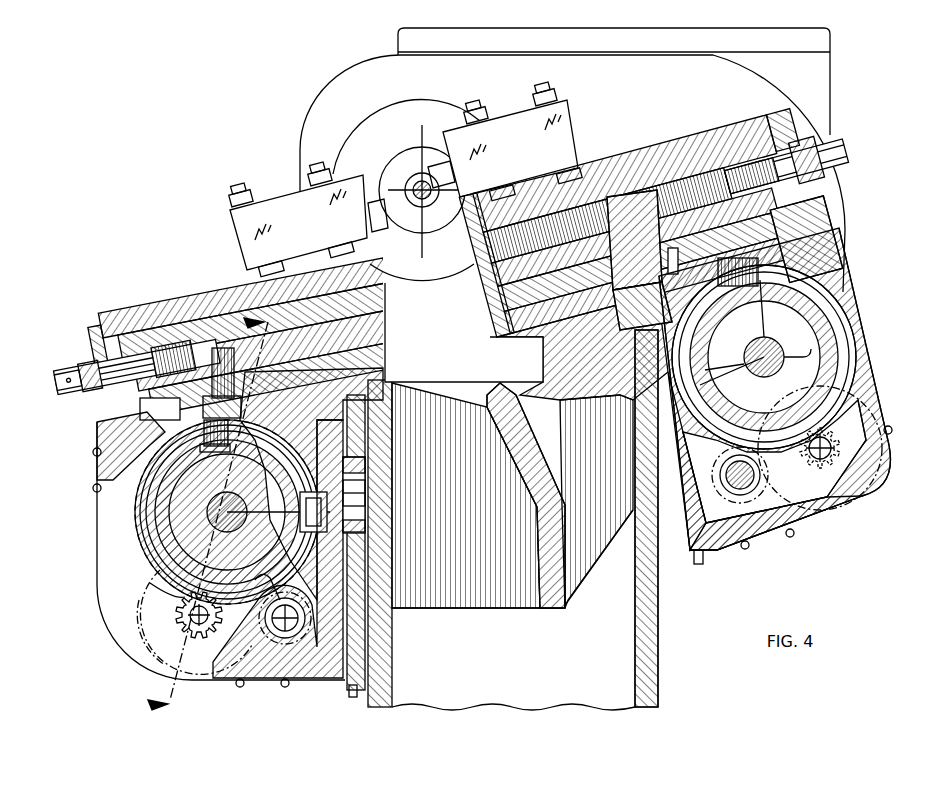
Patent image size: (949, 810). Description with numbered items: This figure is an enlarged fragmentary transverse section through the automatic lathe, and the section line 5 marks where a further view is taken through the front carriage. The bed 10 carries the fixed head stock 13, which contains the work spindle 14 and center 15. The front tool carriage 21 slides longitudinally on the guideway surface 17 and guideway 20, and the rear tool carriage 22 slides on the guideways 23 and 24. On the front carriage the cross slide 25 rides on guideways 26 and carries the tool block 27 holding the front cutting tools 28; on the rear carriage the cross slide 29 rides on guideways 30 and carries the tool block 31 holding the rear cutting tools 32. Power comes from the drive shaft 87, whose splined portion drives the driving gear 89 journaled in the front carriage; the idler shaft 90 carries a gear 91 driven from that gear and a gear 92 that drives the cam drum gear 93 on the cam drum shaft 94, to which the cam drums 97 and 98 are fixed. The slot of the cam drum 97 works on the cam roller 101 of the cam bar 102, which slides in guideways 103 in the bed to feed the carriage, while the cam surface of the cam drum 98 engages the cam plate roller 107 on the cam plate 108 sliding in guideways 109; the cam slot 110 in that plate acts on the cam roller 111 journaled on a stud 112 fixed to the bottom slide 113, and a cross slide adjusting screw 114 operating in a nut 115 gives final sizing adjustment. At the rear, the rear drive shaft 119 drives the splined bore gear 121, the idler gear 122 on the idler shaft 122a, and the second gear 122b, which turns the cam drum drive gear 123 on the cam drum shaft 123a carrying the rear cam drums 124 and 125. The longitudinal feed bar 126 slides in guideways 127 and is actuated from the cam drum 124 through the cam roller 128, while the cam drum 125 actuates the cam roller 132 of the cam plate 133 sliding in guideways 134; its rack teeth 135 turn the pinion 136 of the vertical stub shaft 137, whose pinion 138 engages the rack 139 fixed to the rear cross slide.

The section line 5— 5 is at (221, 522).
The bed 10 is at (660, 616).
The head stock 13 is at (375, 75).
The work spindle 14 is at (414, 146).
The center 15 is at (413, 182).
The guideway surface 17 is at (385, 355).
The guideway 20 is at (352, 608).
The front tool carriage 21 is at (97, 456).
The rear tool carriage 22 is at (832, 232).
The guideway 23 is at (464, 332).
The guideway 24 is at (680, 462).
The cross slide 25 is at (200, 290).
The guideways 26 is at (385, 328).
The tool block 27 is at (297, 219).
The front cutting tools 28 is at (382, 230).
The cross slide 29 is at (718, 128).
The guideways 30 is at (484, 290).
The tool block 31 is at (512, 141).
The rear cutting tools 32 is at (446, 192).
The drive shaft 87 is at (262, 580).
The driving gear 89 is at (278, 549).
The idler shaft 90 is at (190, 620).
The gear 91 is at (139, 614).
The gear 92 is at (150, 583).
The cam drum gear 93 is at (147, 548).
The cam drum shaft 94 is at (238, 508).
The cam drum 97 is at (145, 500).
The cam drum 98 is at (148, 523).
The cam roller 101 is at (300, 516).
The cam bar 102 is at (367, 493).
The guideways 103 is at (367, 528).
The cam plate roller 107 is at (208, 452).
The cam plate 108 is at (220, 449).
The guideways 109 is at (277, 410).
The cam slot 110 is at (140, 418).
The cam roller 111 is at (245, 400).
The stud 112 is at (222, 360).
The bottom slide 113 is at (385, 298).
The cross slide adjusting screw 114 is at (70, 378).
The nut 115 is at (166, 345).
The rear drive shaft 119 is at (740, 462).
The splined bore gear 121 is at (776, 530).
The idler gear 122 is at (885, 450).
The idler shaft 122a is at (830, 445).
The second gear 122b is at (878, 470).
The cam drum drive gear 123 is at (855, 357).
The cam drum shaft 123a is at (764, 368).
The rear cam drum 124 is at (840, 340).
The rear cam drum 125 is at (850, 312).
The longitudinal feed bar 126 is at (625, 362).
The guideways 127 is at (635, 442).
The cam roller 128 is at (715, 382).
The cam roller 132 is at (745, 286).
The cam plate 133 is at (745, 230).
The guideways 134 is at (788, 246).
The rack teeth 135 is at (672, 262).
The pinion 136 is at (606, 290).
The vertical stub shaft 137 is at (652, 284).
The pinion 138 is at (620, 192).
The rack 139 is at (688, 174).